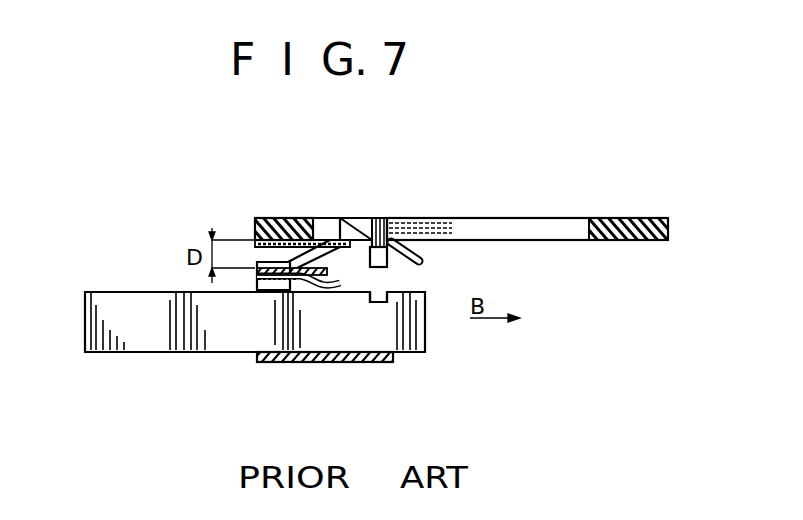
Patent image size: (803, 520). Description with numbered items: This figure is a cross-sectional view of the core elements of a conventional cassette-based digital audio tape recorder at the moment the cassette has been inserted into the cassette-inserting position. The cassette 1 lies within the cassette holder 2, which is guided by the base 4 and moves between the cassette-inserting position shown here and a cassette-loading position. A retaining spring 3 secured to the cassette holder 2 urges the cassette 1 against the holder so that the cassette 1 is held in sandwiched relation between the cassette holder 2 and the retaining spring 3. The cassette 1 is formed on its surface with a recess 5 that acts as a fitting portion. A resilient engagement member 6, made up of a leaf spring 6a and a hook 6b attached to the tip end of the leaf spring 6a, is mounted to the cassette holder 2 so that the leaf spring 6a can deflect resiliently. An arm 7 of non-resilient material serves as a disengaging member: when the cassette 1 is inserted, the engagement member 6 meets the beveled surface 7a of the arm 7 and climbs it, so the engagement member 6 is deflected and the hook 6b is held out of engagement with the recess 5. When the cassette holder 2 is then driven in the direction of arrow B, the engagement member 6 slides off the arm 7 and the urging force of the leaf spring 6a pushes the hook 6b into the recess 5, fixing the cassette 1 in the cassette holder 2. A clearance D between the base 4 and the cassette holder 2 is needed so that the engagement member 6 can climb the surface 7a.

The cassette 1 is at (154, 343).
The cassette holder 2 is at (291, 362).
The retaining spring 3 is at (320, 292).
The base 4 is at (618, 217).
The recess 5 is at (386, 300).
The resilient engagement member 6 is at (363, 218).
The leaf spring 6a is at (327, 218).
The hook 6b is at (390, 266).
The arm 7 is at (280, 218).
The beveled surface 7a is at (412, 241).